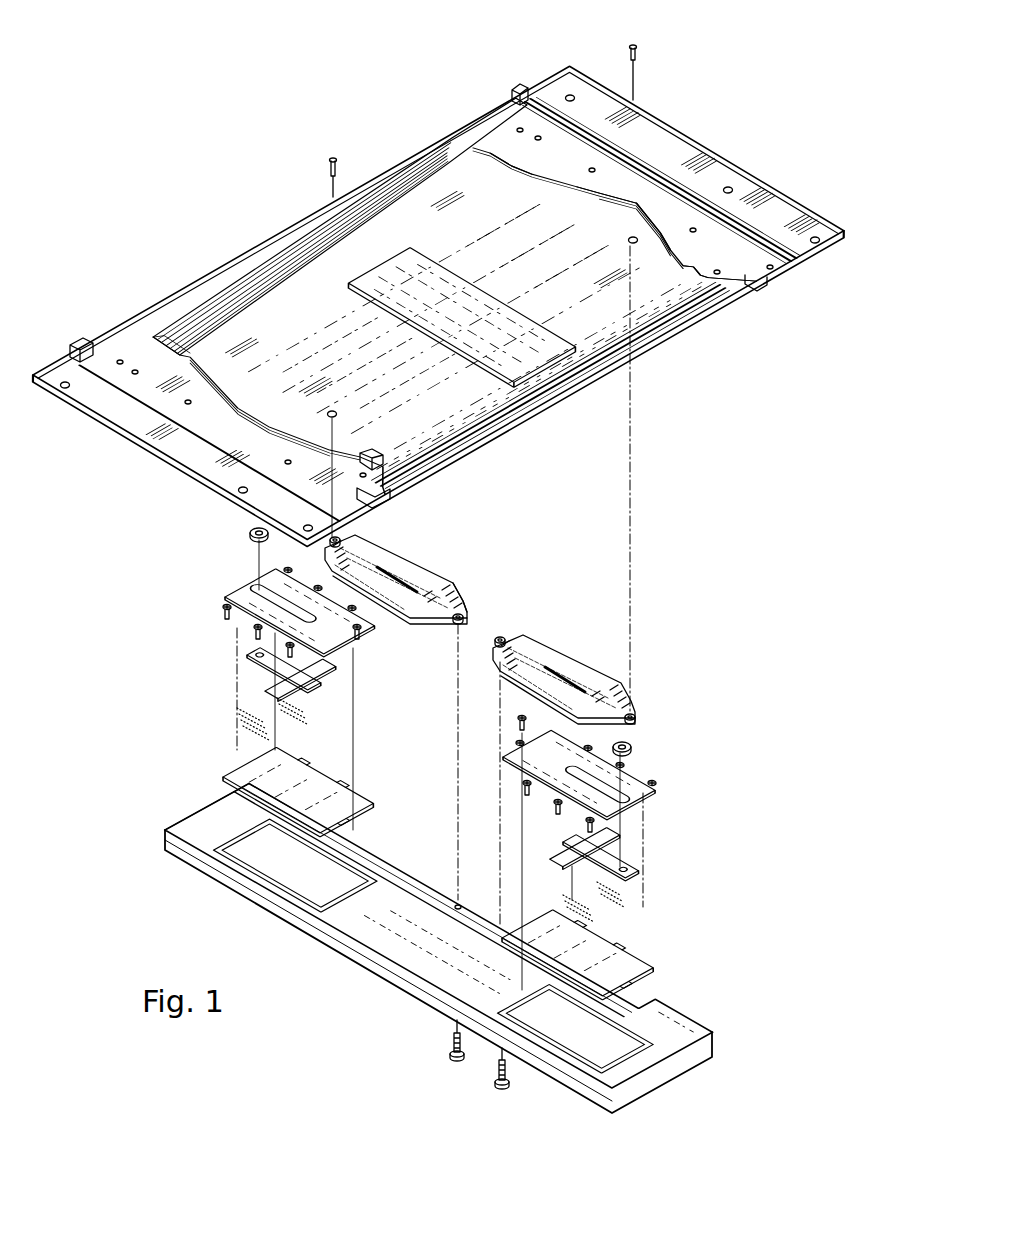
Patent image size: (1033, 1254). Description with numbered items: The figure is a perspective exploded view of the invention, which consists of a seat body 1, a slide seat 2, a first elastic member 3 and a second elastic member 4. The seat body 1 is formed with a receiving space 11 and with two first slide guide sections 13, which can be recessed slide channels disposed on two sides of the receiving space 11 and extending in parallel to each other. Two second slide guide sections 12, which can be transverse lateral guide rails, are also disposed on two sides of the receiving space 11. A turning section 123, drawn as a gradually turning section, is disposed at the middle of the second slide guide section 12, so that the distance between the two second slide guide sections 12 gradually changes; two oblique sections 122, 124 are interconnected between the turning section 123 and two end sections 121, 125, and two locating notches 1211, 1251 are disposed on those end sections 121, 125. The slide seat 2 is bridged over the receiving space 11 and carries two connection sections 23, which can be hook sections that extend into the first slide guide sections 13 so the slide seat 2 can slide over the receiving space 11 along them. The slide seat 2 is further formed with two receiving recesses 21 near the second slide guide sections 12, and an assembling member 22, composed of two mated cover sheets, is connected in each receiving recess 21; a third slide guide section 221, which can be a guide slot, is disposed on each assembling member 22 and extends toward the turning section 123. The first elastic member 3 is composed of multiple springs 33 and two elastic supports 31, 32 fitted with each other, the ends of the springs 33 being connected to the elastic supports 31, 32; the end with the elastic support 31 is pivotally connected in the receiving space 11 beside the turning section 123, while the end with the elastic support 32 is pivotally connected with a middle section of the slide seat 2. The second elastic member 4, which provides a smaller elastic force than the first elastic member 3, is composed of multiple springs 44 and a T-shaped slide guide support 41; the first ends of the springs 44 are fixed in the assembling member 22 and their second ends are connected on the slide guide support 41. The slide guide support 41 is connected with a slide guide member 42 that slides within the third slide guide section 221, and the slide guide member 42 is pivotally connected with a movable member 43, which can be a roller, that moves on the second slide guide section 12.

The seat body 1 is at (438, 363).
The receiving space 11 is at (260, 297).
The second slide guide section 12 is at (538, 22).
The end section 121 is at (705, 285).
The locating notch 1211 is at (700, 271).
The oblique section 122 is at (662, 250).
The turning section 123 is at (583, 193).
The oblique section 124 is at (550, 200).
The end section 125 is at (499, 169).
The locating notch 1251 is at (511, 198).
The first slide guide section 13 is at (677, 187).
The slide seat 2 is at (420, 933).
The receiving recess 21 is at (253, 843).
The assembling member 22 is at (263, 601).
The third slide guide section 221 is at (252, 583).
The connection section 23 is at (183, 823).
The first elastic member 3 is at (480, 601).
The elastic support 31 is at (354, 538).
The elastic support 32 is at (486, 586).
The spring 33 is at (427, 561).
The second elastic member 4 is at (250, 691).
The T-shaped slide guide support 41 is at (312, 688).
The slide guide member 42 is at (247, 654).
The movable member 43 is at (252, 533).
The spring 44 is at (248, 713).